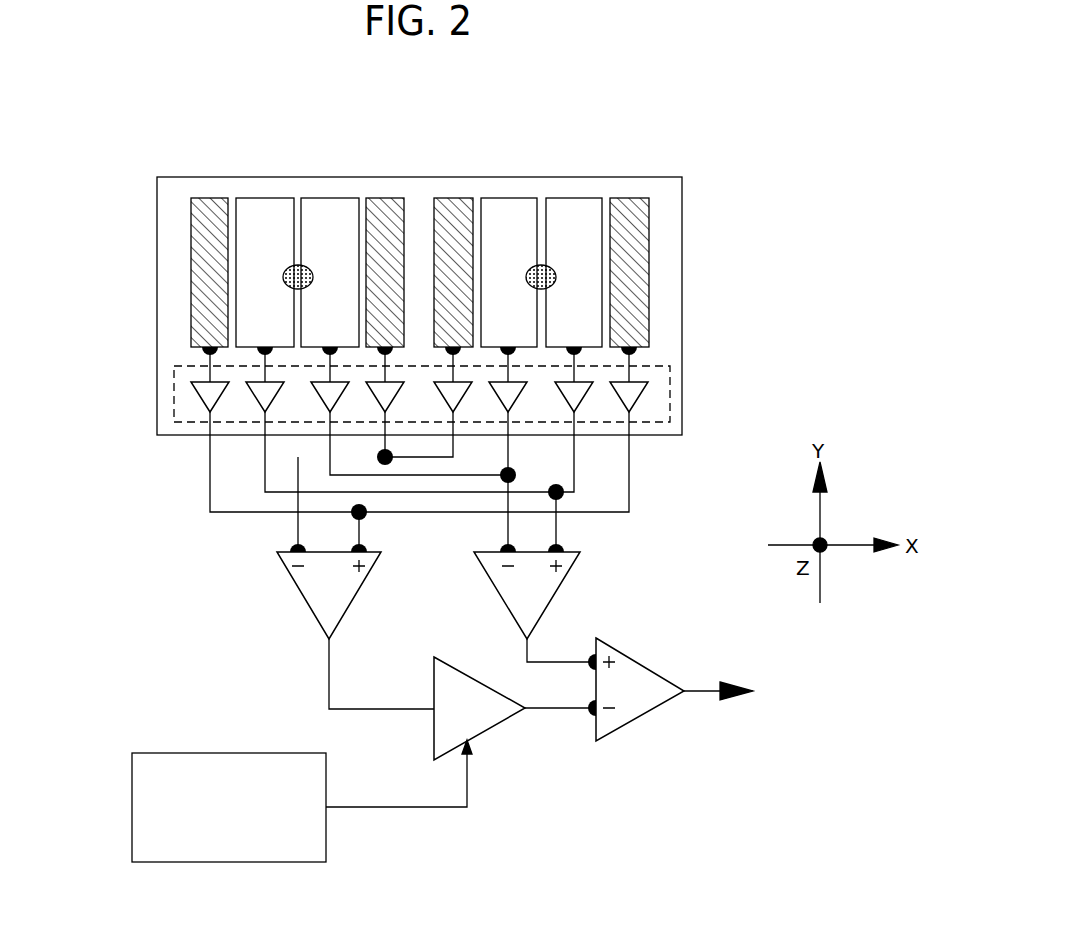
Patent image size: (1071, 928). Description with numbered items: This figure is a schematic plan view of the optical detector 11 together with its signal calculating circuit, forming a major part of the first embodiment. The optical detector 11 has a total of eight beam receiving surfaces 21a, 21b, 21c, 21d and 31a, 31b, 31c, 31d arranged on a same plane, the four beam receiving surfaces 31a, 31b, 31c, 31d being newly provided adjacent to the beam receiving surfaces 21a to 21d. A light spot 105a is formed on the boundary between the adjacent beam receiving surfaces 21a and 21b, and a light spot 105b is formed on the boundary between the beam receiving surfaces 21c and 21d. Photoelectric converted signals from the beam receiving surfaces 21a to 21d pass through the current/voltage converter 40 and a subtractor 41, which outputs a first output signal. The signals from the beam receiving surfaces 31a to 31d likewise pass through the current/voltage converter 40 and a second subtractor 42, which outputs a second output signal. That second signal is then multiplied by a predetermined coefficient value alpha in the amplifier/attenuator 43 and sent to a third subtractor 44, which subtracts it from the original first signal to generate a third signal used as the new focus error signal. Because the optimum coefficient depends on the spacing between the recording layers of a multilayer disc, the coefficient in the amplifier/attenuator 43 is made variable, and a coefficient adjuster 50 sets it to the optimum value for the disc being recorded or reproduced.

The optical detector 11 is at (156, 390).
The beam receiving surface 21a is at (270, 198).
The beam receiving surface 21b is at (325, 202).
The beam receiving surface 21c is at (508, 202).
The beam receiving surface 21d is at (568, 202).
The beam receiving surface 31a is at (213, 198).
The beam receiving surface 31b is at (383, 198).
The beam receiving surface 31c is at (447, 198).
The beam receiving surface 31d is at (625, 200).
The light spot 105a is at (283, 277).
The light spot 105b is at (556, 277).
The current/voltage converter 40 is at (665, 390).
The subtractor 41 is at (500, 592).
The subtractor 42 is at (298, 592).
The amplifier/attenuator 43 is at (492, 727).
The subtractor 44 is at (630, 718).
The coefficient adjuster 50 is at (187, 753).